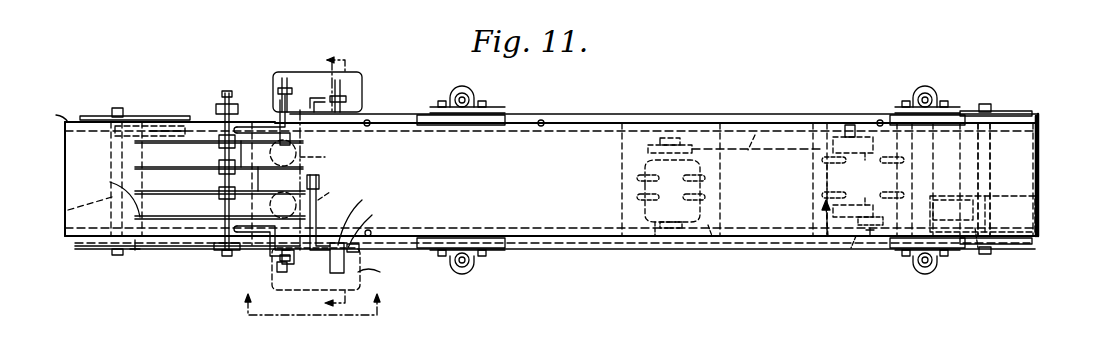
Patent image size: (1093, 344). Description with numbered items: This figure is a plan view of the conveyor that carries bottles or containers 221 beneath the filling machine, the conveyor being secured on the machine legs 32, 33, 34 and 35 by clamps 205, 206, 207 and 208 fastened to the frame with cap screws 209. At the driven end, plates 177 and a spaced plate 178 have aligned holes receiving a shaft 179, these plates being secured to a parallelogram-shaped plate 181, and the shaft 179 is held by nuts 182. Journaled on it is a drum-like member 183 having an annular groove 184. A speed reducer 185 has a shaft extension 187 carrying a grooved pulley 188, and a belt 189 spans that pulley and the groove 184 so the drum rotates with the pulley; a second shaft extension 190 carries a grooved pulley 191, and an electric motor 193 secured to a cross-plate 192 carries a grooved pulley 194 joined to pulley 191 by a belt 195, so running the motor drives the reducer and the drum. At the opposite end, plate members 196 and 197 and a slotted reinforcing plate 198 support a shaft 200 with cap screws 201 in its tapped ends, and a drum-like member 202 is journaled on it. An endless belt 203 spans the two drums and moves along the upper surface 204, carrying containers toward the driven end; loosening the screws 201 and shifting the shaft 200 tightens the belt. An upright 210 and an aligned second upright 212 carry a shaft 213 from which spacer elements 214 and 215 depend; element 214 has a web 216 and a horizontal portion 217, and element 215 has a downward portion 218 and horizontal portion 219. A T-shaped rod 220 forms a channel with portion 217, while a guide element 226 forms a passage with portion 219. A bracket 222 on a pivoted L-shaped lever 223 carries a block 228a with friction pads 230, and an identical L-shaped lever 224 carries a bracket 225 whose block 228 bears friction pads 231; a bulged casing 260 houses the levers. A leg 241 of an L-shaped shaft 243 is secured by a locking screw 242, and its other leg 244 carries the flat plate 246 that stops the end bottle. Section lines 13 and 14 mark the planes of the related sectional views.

The section line 13- 13 is at (317, 180).
The section line 14- 14 is at (313, 297).
The leg 32 is at (924, 266).
The leg 33 is at (470, 264).
The leg 34 is at (474, 97).
The leg 35 is at (935, 96).
The plates 177 is at (1005, 110).
The plate 178 is at (1015, 246).
The shaft 179 is at (986, 150).
The plate 181 is at (977, 252).
The nuts 182 is at (990, 98).
The drum-like member 183 is at (1040, 122).
The annular groove 184 is at (1036, 216).
The speed reducer 185 is at (828, 240).
The shaft extension 187 is at (870, 248).
The grooved pulley 188 is at (851, 250).
The belt 189 is at (1038, 185).
The shaft extension 190 is at (852, 125).
The grooved pulley 191 is at (828, 160).
The cross-plate 192 is at (712, 240).
The electric motor 193 is at (655, 240).
The grooved pulley 194 is at (662, 140).
The belt 195 is at (755, 135).
The plate member 196 is at (90, 114).
The plate member 197 is at (70, 250).
The reinforcing plate 198 is at (137, 252).
The shaft 200 is at (68, 210).
The cap screws 201 is at (120, 110).
The drum-like member 202 is at (60, 116).
The endless belt 203 is at (74, 150).
The upper surface 204 is at (600, 116).
The clamp 205 is at (915, 266).
The clamp 206 is at (460, 266).
The clamp 207 is at (464, 84).
The clamp 208 is at (922, 90).
The cap screws 209 is at (438, 105).
The upright 210 is at (217, 252).
The second upright 212 is at (218, 105).
The shaft 213 is at (233, 256).
The spacer element 214 is at (221, 161).
The spacer element 215 is at (222, 199).
The web 216 is at (222, 175).
The horizontal portion 217 is at (245, 165).
The downwardly extending portion 218 is at (232, 199).
The horizontal portion 219 is at (152, 194).
The T-shaped rod 220 is at (176, 133).
The bottles or containers 221 is at (332, 174).
The bracket 222 is at (248, 125).
The L-shaped lever 223 is at (290, 104).
The L-shaped lever 224 is at (302, 261).
The bracket 225 is at (283, 274).
The guide element 226 is at (107, 196).
The block 228 is at (273, 237).
The block 228a is at (298, 129).
The friction pads 230 is at (283, 179).
The friction pads 231 is at (267, 180).
The leg 241 is at (372, 231).
The locking screw 242 is at (360, 262).
The L-shaped shaft 243 is at (372, 215).
The leg 244 is at (362, 200).
The flat plate 246 is at (318, 206).
The bulged casing 260 is at (360, 272).